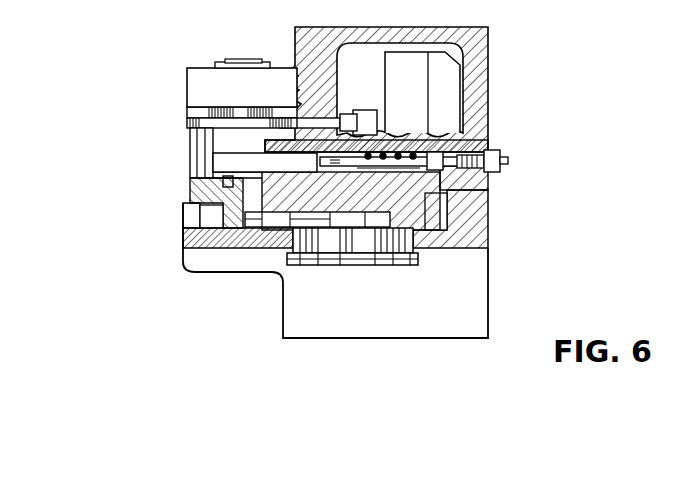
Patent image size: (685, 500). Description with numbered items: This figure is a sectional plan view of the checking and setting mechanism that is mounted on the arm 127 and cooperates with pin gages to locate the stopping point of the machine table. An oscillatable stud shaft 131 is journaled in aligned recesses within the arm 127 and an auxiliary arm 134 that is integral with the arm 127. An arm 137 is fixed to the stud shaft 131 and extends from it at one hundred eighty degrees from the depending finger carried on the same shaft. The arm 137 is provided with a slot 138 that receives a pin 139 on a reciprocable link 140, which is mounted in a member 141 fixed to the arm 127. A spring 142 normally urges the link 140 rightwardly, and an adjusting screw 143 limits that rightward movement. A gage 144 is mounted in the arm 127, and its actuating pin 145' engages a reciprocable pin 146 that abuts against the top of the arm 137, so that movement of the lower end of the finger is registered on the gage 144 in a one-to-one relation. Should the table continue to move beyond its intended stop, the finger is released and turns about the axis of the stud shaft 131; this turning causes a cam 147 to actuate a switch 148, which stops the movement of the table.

The arm 127 is at (482, 223).
The oscillatable stud shaft 131 is at (197, 172).
The auxiliary arm 134 is at (197, 74).
The arm 137 is at (190, 190).
The slot 138 is at (227, 183).
The pin 139 is at (218, 178).
The reciprocable link 140 is at (251, 162).
The member 141 is at (482, 182).
The spring 142 is at (413, 157).
The adjusting screw 143 is at (502, 160).
The gage 144 is at (410, 256).
The actuating pin 145' is at (317, 252).
The reciprocable pin 146 is at (247, 252).
The cam 147 is at (188, 113).
The switch 148 is at (377, 113).